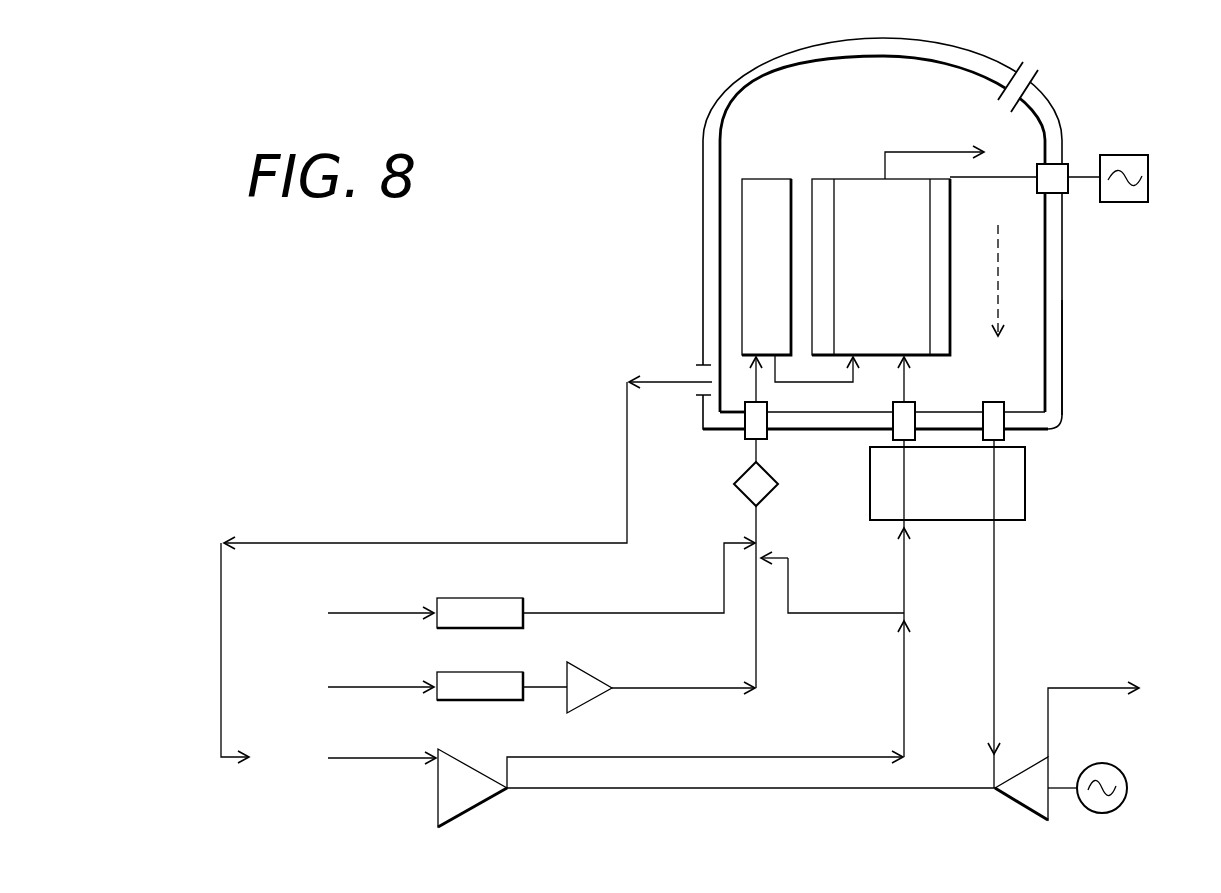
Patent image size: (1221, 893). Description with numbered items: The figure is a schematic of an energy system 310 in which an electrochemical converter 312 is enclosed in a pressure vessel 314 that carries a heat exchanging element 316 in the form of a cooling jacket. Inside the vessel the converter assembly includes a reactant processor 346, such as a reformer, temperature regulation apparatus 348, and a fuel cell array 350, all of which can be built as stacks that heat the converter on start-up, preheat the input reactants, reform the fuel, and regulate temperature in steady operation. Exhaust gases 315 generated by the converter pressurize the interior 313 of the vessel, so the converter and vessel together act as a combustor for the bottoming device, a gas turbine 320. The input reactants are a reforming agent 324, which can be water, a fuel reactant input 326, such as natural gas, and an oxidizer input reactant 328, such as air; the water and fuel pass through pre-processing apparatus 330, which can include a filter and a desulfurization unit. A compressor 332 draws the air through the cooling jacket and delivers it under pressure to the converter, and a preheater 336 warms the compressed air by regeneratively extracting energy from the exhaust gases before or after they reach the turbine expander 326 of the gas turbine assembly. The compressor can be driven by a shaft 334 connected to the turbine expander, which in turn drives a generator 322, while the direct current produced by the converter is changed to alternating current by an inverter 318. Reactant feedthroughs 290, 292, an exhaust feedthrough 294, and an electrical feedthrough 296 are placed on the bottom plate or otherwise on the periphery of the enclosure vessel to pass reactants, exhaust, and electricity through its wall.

The energy system 310 is at (924, 36).
The electrochemical converter 312 is at (786, 108).
The interior of pressure vessel 313 is at (880, 106).
The pressure vessel 314 is at (995, 66).
The exhaust gases 315 is at (935, 152).
The heat exchanging element 316 is at (1062, 378).
The inverter 318 is at (1148, 182).
The gas turbine 320 is at (782, 798).
The generator 322 is at (1120, 768).
The reforming agent 324 is at (383, 612).
The fuel reactant input 326 is at (383, 686).
The oxidizer input reactant 328 is at (1032, 68).
The pre-processing apparatus 330 is at (578, 613).
The compressor 332 is at (490, 797).
The shaft 334 is at (618, 790).
The preheater 336 is at (1025, 492).
The reactant processor 346 is at (762, 233).
The temperature regulation apparatus 348 is at (826, 190).
The fuel cell array 350 is at (895, 251).
The reactant feedthrough 290 is at (767, 440).
The reactant feedthrough 292 is at (893, 440).
The exhaust feedthrough 294 is at (1004, 439).
The electrical feedthrough 296 is at (1068, 194).